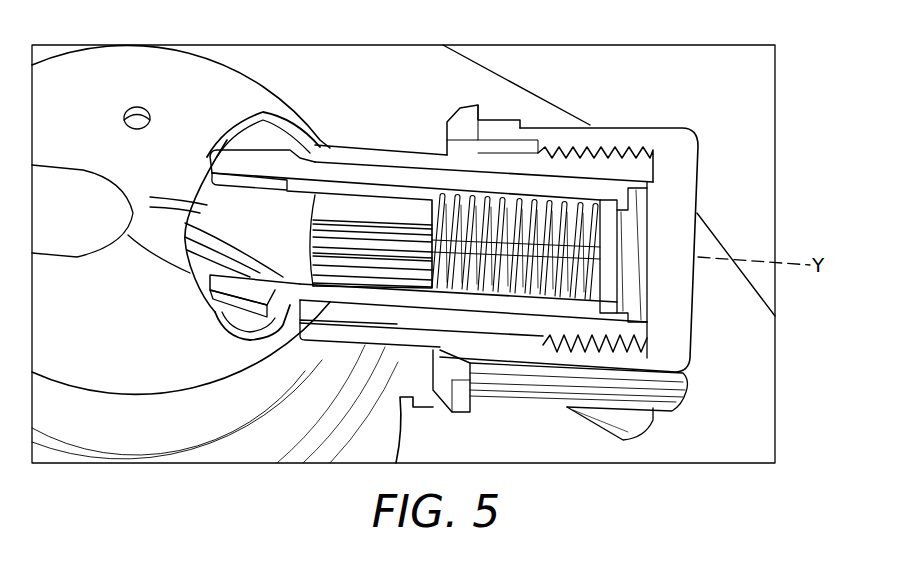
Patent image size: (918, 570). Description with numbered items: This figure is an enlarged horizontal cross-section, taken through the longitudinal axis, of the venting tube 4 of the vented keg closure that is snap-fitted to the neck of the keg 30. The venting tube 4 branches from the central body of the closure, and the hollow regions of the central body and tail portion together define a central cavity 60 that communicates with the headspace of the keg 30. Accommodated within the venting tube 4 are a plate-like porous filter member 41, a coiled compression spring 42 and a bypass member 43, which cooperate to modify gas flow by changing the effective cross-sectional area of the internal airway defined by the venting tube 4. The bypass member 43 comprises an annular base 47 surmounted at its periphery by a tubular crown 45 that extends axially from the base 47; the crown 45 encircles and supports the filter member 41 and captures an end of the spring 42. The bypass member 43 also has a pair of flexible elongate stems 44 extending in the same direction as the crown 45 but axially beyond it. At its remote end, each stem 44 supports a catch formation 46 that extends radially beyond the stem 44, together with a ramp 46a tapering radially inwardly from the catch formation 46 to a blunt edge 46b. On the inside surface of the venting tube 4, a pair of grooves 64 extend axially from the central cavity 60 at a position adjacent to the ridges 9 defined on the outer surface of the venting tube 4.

The keg 30 is at (744, 443).
The venting tube 4 is at (352, 314).
The central cavity 60 is at (128, 198).
The catch formation 46 is at (267, 175).
The ramp 46a is at (250, 147).
The blunt edge 46b is at (207, 203).
The grooves 64 is at (307, 273).
The flexible elongate stems 44 is at (368, 168).
The ridges 9 is at (425, 147).
The bypass member 43 is at (600, 177).
The coiled compression spring 42 is at (499, 227).
The porous filter member 41 is at (610, 258).
The annular base 47 is at (623, 203).
The tubular crown 45 is at (547, 340).